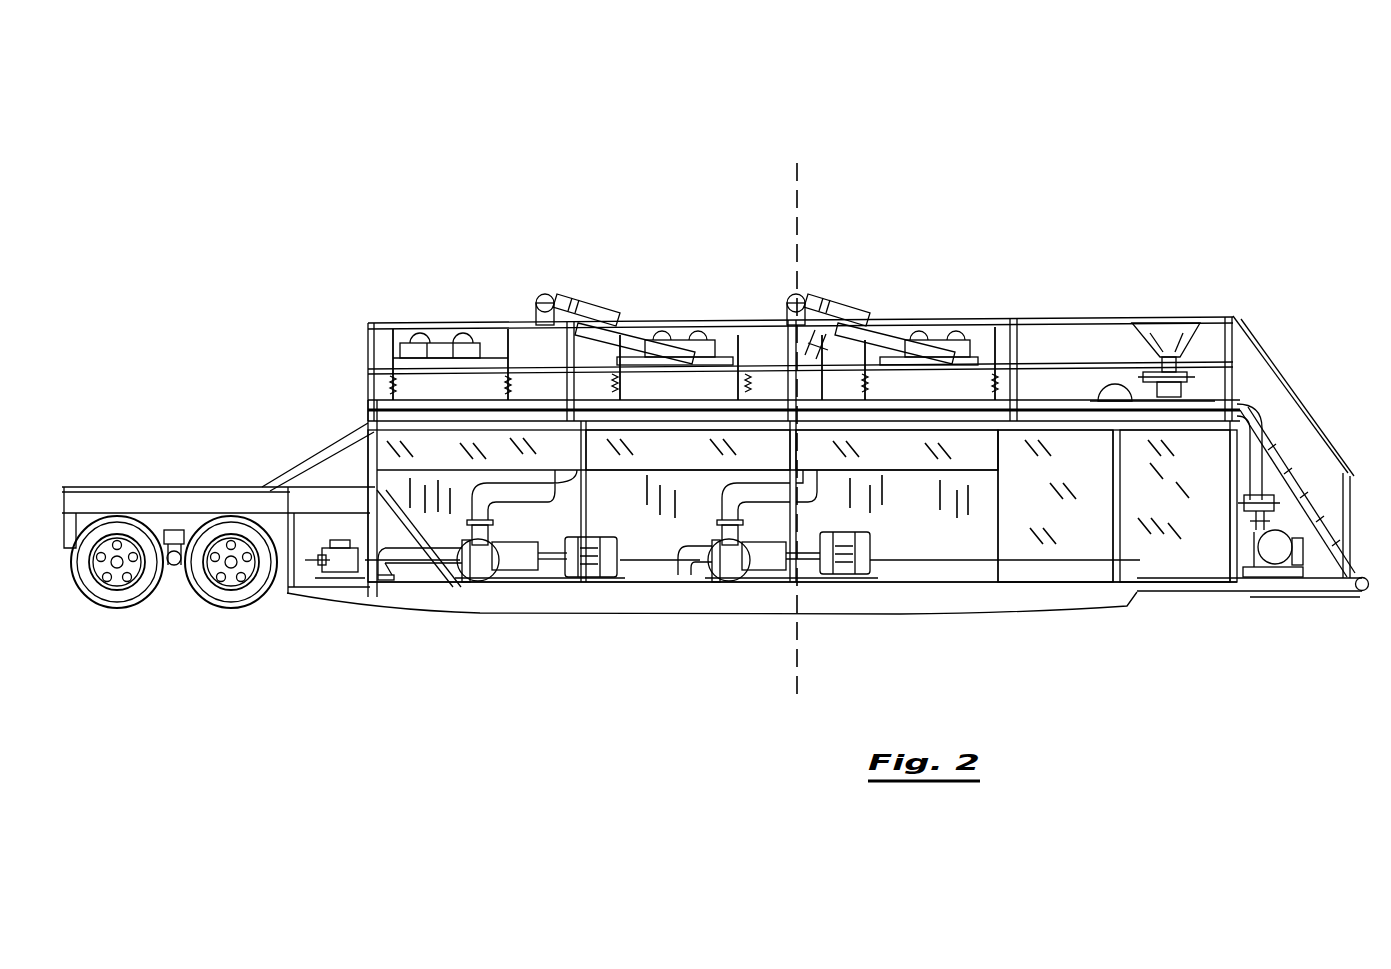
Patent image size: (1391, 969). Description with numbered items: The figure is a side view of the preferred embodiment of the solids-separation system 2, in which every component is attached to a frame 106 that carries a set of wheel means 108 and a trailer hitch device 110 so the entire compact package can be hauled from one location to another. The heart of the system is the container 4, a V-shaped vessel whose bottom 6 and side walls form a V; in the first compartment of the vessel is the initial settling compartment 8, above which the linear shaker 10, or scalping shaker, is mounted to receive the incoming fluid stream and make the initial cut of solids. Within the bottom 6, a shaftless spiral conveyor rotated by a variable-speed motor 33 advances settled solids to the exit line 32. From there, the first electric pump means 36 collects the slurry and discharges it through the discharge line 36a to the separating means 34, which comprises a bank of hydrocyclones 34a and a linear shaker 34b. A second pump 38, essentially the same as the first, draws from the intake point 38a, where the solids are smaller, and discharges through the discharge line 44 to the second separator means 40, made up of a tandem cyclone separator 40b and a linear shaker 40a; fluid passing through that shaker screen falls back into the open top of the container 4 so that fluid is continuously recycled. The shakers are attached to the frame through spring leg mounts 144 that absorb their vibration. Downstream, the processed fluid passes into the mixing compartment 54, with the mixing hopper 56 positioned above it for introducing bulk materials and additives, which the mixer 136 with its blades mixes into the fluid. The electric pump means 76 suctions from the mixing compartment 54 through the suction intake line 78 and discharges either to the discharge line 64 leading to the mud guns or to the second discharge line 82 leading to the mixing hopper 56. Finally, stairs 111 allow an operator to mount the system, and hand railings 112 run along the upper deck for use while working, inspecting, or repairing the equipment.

The system 2 is at (297, 352).
The container 4 is at (888, 515).
The bottom 6 is at (978, 562).
The initial settling compartment 8 is at (797, 163).
The linear shaker 10 is at (447, 345).
The exit line 32 is at (392, 580).
The motor 33 is at (330, 565).
The separating means 34 is at (696, 400).
The hydrocyclones 34a is at (590, 340).
The linear shaker 34b is at (705, 345).
The first electric pump means 36 is at (505, 578).
The discharge line 36a is at (533, 497).
The second electric pump 38 is at (760, 573).
The intake point 38a is at (686, 578).
The second separator means 40 is at (944, 395).
The linear shaker 40a is at (962, 345).
The tandem cyclone separator 40b is at (845, 330).
The discharge line 44 is at (777, 577).
The mixing compartment 54 is at (1178, 555).
The mixing hopper 56 is at (1165, 345).
The discharge line 64 is at (1258, 470).
The electric pump means 76 is at (1276, 555).
The suction intake line 78 is at (1258, 560).
The second discharge line 82 is at (1265, 405).
The frame 106 is at (1030, 597).
The wheel means 108 is at (155, 625).
The trailer hitch device 110 is at (1300, 600).
The stairs 111 is at (1272, 490).
The hand railings 112 is at (1050, 318).
The mixer 136 is at (1110, 398).
The spring leg mounts 144 is at (512, 357).